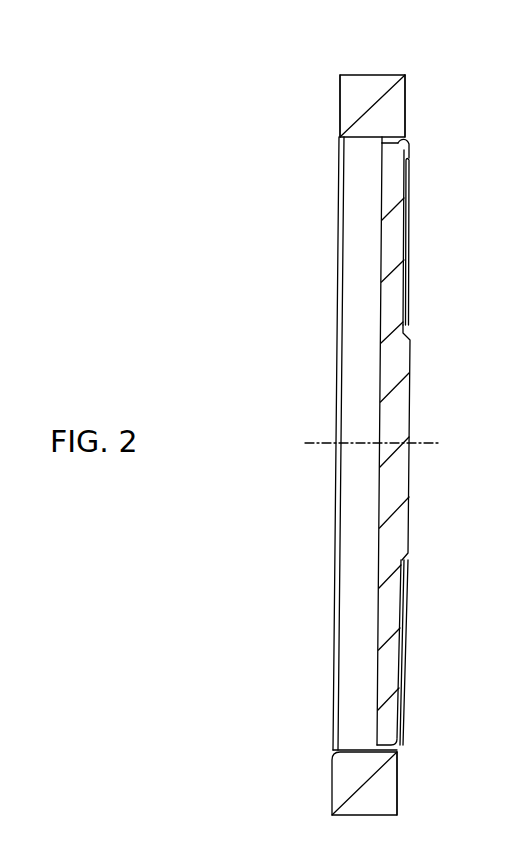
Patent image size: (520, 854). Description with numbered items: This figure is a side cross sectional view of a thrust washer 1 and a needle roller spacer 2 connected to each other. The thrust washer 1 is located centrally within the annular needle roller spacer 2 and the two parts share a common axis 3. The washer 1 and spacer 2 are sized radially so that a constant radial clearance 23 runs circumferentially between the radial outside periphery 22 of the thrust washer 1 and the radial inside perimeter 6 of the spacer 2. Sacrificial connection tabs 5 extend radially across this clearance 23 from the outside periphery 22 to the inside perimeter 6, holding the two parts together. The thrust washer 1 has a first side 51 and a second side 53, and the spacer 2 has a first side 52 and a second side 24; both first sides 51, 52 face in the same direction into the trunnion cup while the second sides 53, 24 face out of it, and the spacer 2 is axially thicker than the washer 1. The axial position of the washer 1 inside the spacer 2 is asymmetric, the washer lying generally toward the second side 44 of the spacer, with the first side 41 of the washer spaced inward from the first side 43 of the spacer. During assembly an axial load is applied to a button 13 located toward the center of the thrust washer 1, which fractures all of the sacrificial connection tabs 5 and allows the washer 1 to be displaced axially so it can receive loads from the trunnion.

The thrust washer 1 is at (409, 250).
The needle roller spacer 2 is at (373, 73).
The common axis 3 is at (318, 437).
The sacrificial connection tabs 5 is at (384, 141).
The radial inside perimeter 6 is at (352, 745).
The button 13 is at (413, 397).
The radial outside periphery 22 is at (393, 745).
The radial clearance 23 is at (399, 142).
The second side of the spacer 24 is at (407, 110).
The first side of the washer 41 is at (378, 683).
The first side of the spacer 43 is at (336, 793).
The second side of the spacer 44 is at (396, 793).
The first side of the thrust washer 51 is at (380, 234).
The first side of the spacer 52 is at (338, 103).
The second side of the thrust washer 53 is at (407, 300).